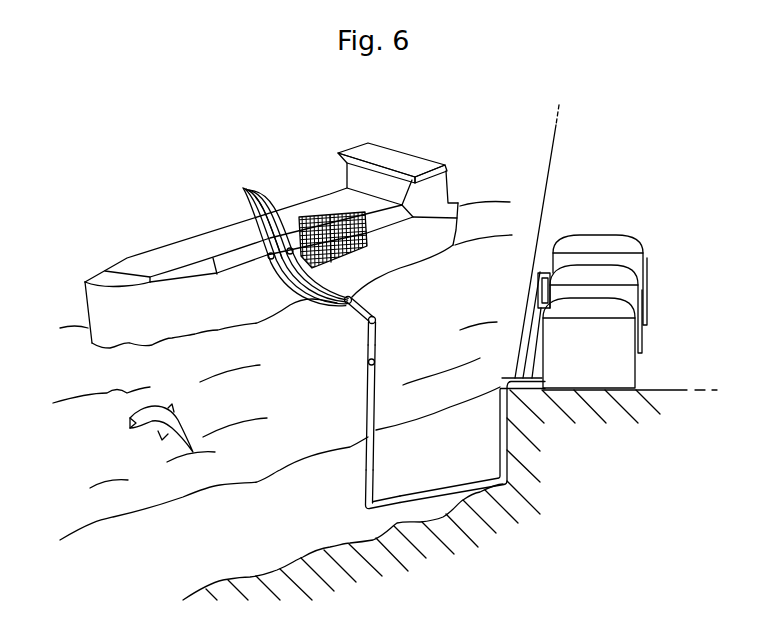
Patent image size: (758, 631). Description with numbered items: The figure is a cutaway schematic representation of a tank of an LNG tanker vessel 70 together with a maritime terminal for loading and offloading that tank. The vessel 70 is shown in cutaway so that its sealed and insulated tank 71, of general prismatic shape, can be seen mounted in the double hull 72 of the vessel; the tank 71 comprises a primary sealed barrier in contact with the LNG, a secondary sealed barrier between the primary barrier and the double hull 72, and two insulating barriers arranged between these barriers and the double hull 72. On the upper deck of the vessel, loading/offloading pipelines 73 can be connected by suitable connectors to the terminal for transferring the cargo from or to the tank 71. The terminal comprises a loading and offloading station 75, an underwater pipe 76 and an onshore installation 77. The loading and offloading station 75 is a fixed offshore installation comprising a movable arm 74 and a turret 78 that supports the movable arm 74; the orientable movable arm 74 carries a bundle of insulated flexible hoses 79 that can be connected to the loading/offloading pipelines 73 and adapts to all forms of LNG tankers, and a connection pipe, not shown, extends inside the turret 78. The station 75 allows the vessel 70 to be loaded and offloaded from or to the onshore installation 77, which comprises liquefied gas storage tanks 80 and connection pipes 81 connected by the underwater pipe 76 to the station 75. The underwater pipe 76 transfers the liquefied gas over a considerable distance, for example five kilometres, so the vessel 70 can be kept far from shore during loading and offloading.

The LNG tanker vessel 70 is at (421, 146).
The sealed and insulated tank 71 is at (329, 218).
The double hull 72 is at (372, 250).
The loading/offloading pipelines 73 is at (240, 184).
The movable arm 74 is at (384, 339).
The loading and offloading station 75 is at (364, 415).
The underwater pipe 76 is at (437, 485).
The onshore installation 77 is at (607, 211).
The turret 78 is at (365, 458).
The bundle of insulated flexible hoses 79 is at (333, 318).
The liquefied gas storage tanks 80 is at (569, 238).
The connection pipes 81 is at (522, 328).